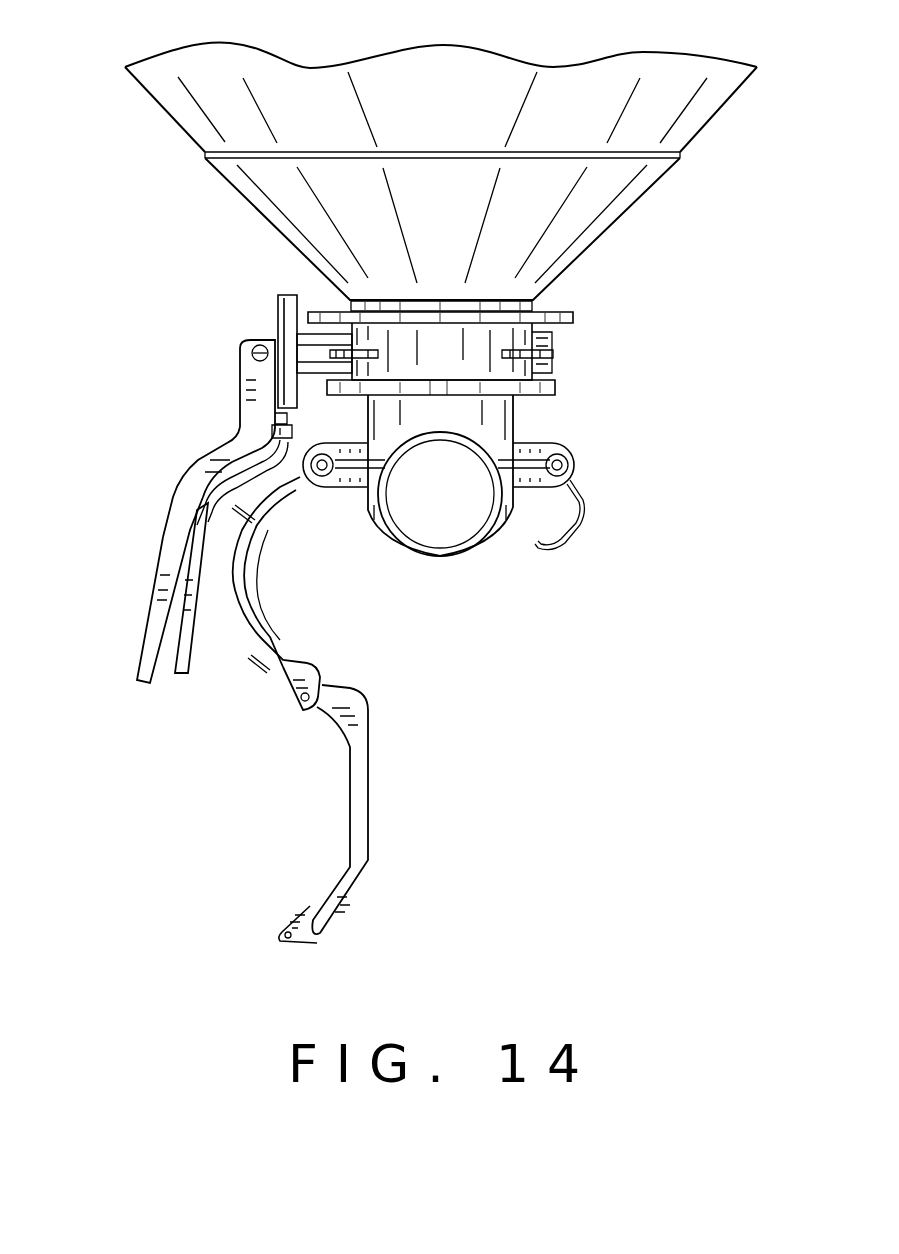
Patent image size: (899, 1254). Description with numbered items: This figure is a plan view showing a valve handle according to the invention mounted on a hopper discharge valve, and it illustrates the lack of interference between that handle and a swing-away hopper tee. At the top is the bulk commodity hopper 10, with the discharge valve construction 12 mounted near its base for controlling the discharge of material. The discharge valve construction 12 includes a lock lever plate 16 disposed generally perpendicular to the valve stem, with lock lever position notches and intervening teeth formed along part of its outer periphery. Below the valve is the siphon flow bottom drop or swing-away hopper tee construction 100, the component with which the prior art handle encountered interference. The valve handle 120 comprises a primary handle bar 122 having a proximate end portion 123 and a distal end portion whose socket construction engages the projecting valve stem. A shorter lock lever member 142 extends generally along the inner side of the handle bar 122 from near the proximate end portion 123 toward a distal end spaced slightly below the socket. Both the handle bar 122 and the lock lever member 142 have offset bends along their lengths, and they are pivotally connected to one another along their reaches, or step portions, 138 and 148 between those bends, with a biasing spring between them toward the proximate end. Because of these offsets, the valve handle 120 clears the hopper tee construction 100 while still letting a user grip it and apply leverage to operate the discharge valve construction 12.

The bulk commodity hopper 10 is at (297, 227).
The discharge valve construction 12 is at (577, 313).
The lock lever plate 16 is at (278, 313).
The swing-away hopper tee construction 100 is at (250, 642).
The valve handle 120 is at (151, 535).
The primary handle bar 122 is at (158, 550).
The proximate end portion 123 is at (137, 668).
The reach or step portion 138 is at (200, 463).
The lock lever member 142 is at (193, 620).
The reach or step portion 148 is at (257, 480).